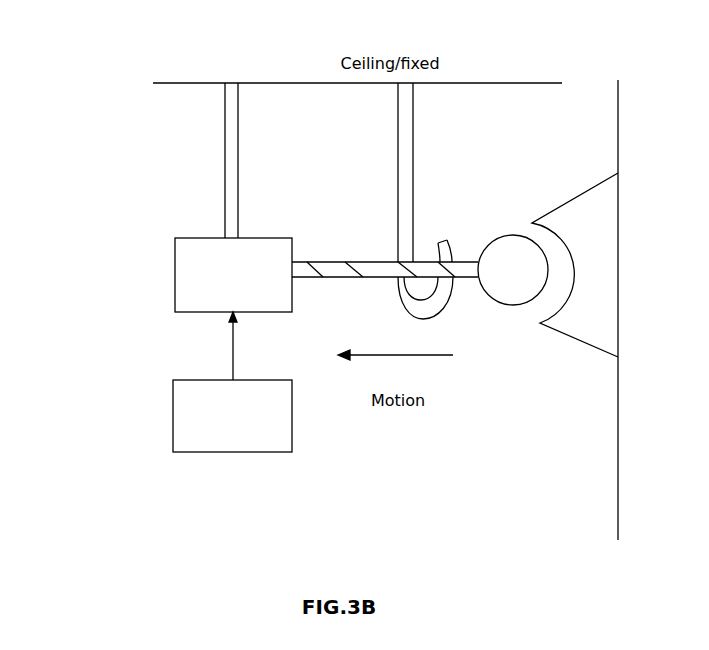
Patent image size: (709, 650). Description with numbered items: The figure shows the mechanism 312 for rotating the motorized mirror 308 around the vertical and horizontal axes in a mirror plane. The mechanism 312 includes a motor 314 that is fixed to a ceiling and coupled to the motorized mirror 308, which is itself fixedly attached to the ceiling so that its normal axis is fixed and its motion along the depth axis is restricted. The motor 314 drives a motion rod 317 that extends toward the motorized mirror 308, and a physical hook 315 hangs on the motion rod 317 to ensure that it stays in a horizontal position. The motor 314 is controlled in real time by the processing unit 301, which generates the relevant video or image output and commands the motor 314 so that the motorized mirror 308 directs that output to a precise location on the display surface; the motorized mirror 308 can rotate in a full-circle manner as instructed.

The processing unit 301 is at (248, 380).
The motorized mirror 308 is at (618, 138).
The mechanism 312 is at (127, 527).
The motor 314 is at (262, 237).
The physical hook 315 is at (447, 247).
The motion rod 317 is at (333, 262).